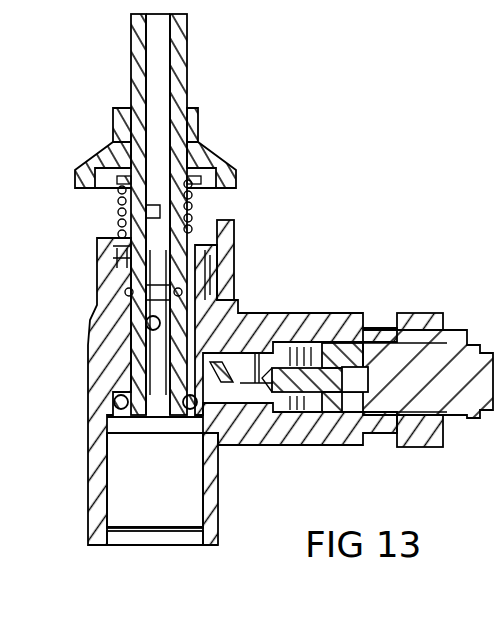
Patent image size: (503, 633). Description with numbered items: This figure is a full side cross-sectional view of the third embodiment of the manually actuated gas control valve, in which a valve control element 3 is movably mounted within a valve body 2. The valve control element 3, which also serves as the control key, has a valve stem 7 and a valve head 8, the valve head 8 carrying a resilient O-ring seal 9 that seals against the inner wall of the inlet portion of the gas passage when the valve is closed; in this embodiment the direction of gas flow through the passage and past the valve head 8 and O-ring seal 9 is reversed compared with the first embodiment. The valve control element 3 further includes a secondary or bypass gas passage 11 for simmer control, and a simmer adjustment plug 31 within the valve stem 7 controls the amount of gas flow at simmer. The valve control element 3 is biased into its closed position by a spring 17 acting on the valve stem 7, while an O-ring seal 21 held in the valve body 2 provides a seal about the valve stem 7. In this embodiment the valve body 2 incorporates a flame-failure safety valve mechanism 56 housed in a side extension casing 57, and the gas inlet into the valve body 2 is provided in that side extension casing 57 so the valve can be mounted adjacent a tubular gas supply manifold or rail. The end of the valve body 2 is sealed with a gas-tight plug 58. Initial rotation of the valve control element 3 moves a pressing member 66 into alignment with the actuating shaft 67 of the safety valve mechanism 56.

The valve body 2 is at (92, 488).
The valve control element 3 is at (178, 53).
The valve stem 7 is at (178, 53).
The valve head 8 is at (157, 408).
The resilient O-ring seal 9 is at (114, 399).
The bypass gas passage 11 is at (172, 415).
The spring 17 is at (192, 210).
The O-ring seal 21 is at (126, 260).
The simmer adjustment plug 31 is at (150, 232).
The flame-failure safety valve mechanism 56 is at (355, 292).
The side extension casing 57 is at (320, 434).
The gas-tight plug 58 is at (143, 536).
The pressing member 66 is at (226, 178).
The actuating shaft 67 is at (222, 241).